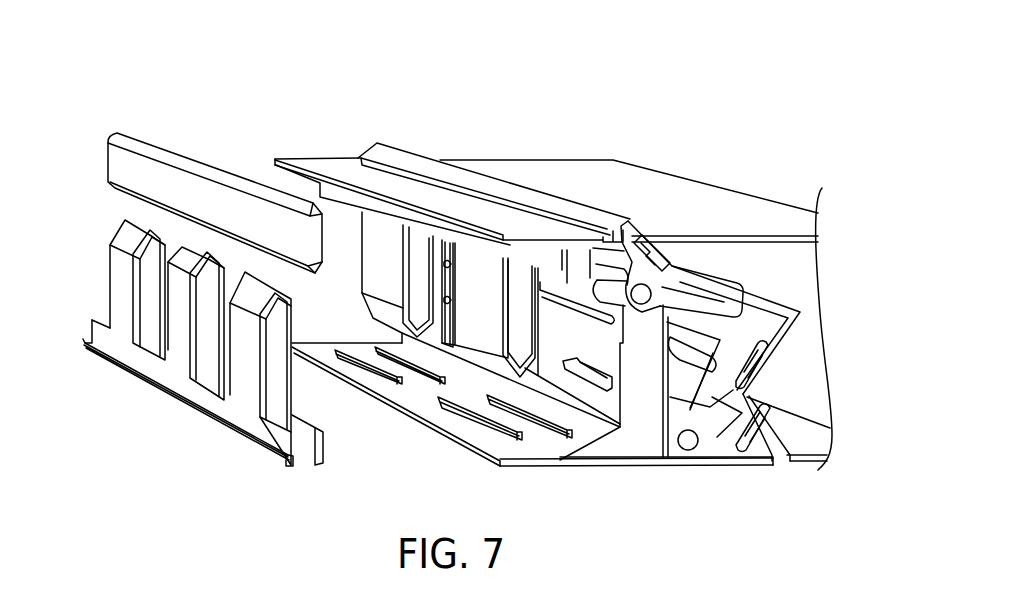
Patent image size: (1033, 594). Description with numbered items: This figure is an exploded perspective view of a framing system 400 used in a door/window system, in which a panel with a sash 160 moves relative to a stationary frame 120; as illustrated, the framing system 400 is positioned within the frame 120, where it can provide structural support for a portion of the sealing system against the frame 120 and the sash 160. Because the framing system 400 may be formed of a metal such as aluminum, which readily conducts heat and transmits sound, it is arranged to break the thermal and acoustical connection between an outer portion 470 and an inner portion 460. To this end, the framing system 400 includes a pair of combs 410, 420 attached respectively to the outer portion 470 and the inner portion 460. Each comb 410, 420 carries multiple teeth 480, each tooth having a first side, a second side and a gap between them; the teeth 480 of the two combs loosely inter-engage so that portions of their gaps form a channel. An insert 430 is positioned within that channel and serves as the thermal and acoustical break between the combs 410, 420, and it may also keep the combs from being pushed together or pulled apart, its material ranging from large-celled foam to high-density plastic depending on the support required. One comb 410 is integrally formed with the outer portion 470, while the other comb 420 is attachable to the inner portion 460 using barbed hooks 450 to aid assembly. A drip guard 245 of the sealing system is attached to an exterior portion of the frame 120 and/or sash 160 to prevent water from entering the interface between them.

The framing system 400 is at (228, 118).
The insert 430 is at (107, 168).
The outer portion 470 is at (312, 158).
The drip guard 245 is at (370, 143).
The sash 160 is at (735, 188).
The teeth 480 is at (358, 217).
The comb 420 is at (312, 425).
The comb 410 is at (362, 293).
The inner portion 460 is at (552, 468).
The barbed hooks 450 is at (442, 410).
The stationary frame 120 is at (670, 463).